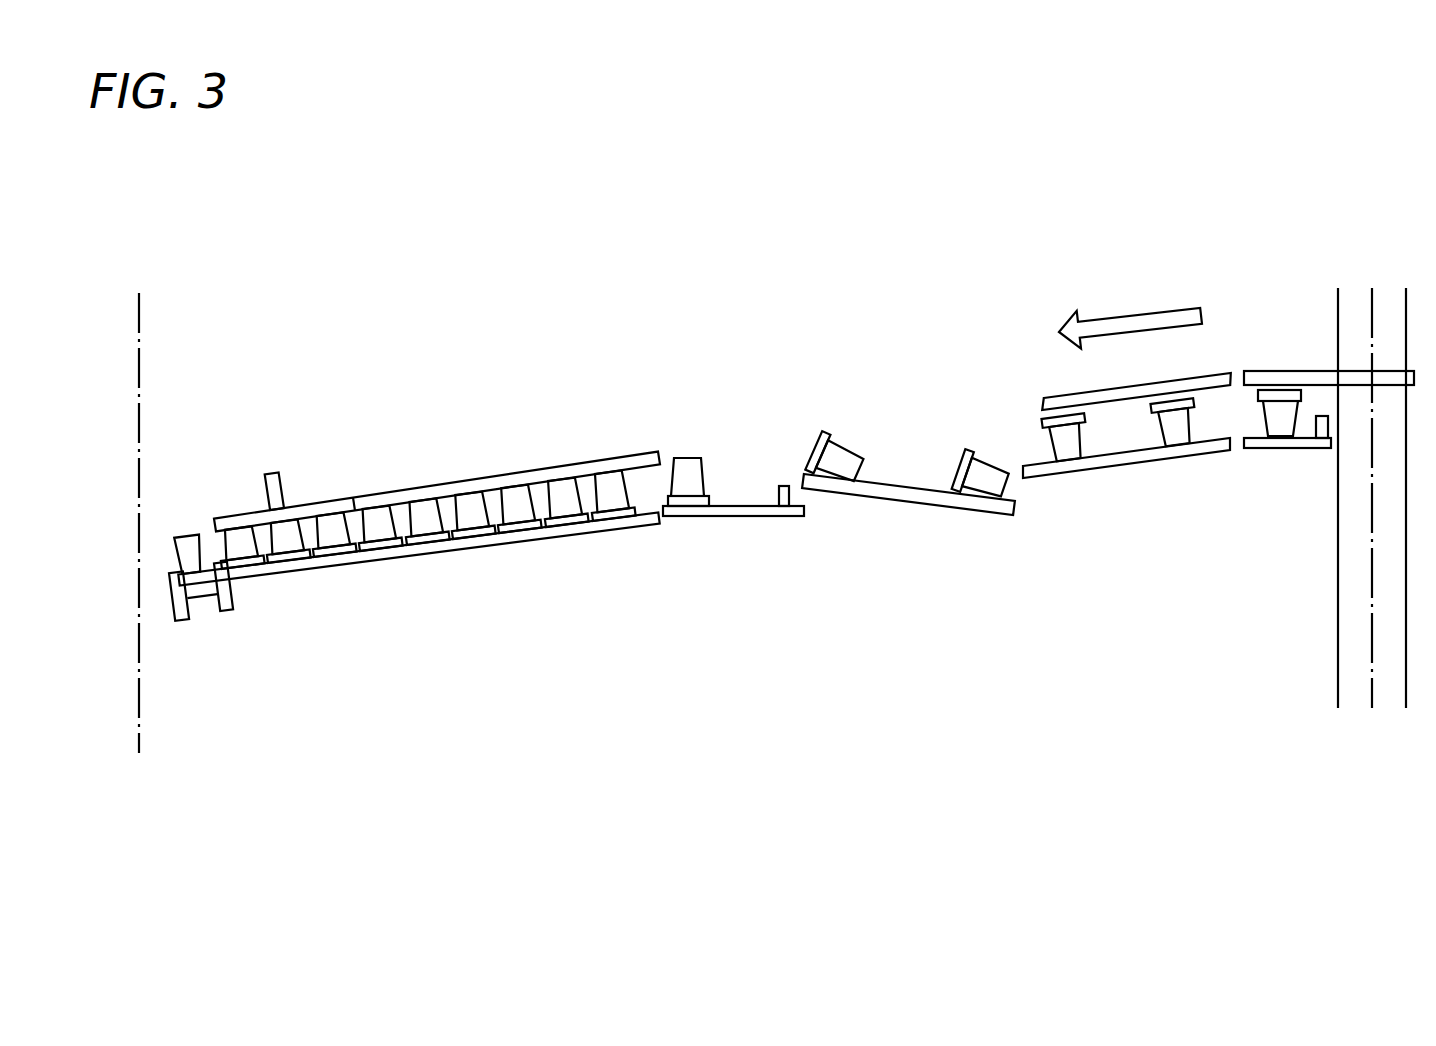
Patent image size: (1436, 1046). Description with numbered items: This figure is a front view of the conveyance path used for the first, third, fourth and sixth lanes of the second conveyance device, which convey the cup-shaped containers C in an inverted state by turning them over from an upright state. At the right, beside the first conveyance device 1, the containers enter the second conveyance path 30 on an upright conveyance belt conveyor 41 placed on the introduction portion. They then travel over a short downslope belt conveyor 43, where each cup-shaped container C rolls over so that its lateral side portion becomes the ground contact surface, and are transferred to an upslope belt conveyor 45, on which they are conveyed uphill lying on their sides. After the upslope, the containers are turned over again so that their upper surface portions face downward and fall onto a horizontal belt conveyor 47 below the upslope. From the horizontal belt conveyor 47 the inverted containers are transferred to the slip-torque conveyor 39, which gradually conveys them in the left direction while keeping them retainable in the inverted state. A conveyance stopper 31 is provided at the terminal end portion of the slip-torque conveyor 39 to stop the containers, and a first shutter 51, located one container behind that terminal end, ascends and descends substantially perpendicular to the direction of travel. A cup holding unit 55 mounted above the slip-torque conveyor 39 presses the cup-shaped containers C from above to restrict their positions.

The first conveyance device 1 is at (1337, 342).
The second conveyance path 30 is at (623, 557).
The conveyance stopper 31 is at (175, 619).
The slip-torque conveyor 39 is at (414, 574).
The upright conveyance belt conveyor 41 is at (1278, 446).
The downslope belt conveyor 43 is at (1123, 458).
The upslope belt conveyor 45 is at (926, 469).
The horizontal belt conveyor 47 is at (715, 516).
The first shutter 51 is at (215, 563).
The cup holding unit 55 is at (276, 470).
The cup-shaped container C is at (848, 440).